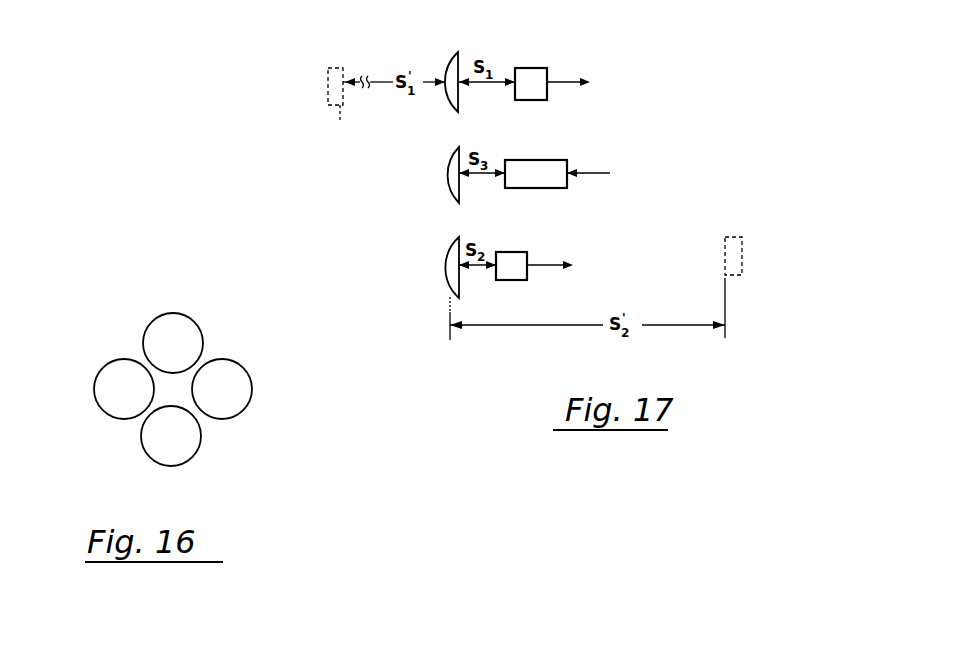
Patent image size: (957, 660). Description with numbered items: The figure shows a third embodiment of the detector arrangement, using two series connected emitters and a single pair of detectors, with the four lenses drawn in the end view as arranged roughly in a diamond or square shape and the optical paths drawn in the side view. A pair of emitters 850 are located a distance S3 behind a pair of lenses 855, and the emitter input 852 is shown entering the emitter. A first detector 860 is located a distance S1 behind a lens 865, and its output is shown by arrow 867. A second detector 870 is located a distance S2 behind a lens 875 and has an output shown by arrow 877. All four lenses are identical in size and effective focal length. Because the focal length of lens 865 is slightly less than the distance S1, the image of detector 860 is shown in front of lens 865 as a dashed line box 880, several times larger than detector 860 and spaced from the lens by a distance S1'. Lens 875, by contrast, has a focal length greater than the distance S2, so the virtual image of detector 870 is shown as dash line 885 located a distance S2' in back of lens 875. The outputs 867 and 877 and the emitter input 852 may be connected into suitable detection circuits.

In FIG. 17, the emitter 850 is at (527, 160).
In FIG. 16, the emitter 850 is at (107, 360).
In FIG. 17, the emitter input 852 is at (597, 173).
In FIG. 17, the lens 855 is at (449, 168).
In FIG. 17, the first detector 860 is at (530, 68).
In FIG. 17, the lens 865 is at (450, 63).
In FIG. 16, the lens 865 is at (195, 325).
In FIG. 17, the output 867 is at (573, 83).
In FIG. 17, the second detector 870 is at (513, 252).
In FIG. 17, the lens 875 is at (447, 252).
In FIG. 16, the lens 875 is at (200, 440).
In FIG. 17, the output 877 is at (547, 267).
In FIG. 17, the dashed line box 880 is at (344, 108).
In FIG. 17, the dash line 885 is at (742, 255).